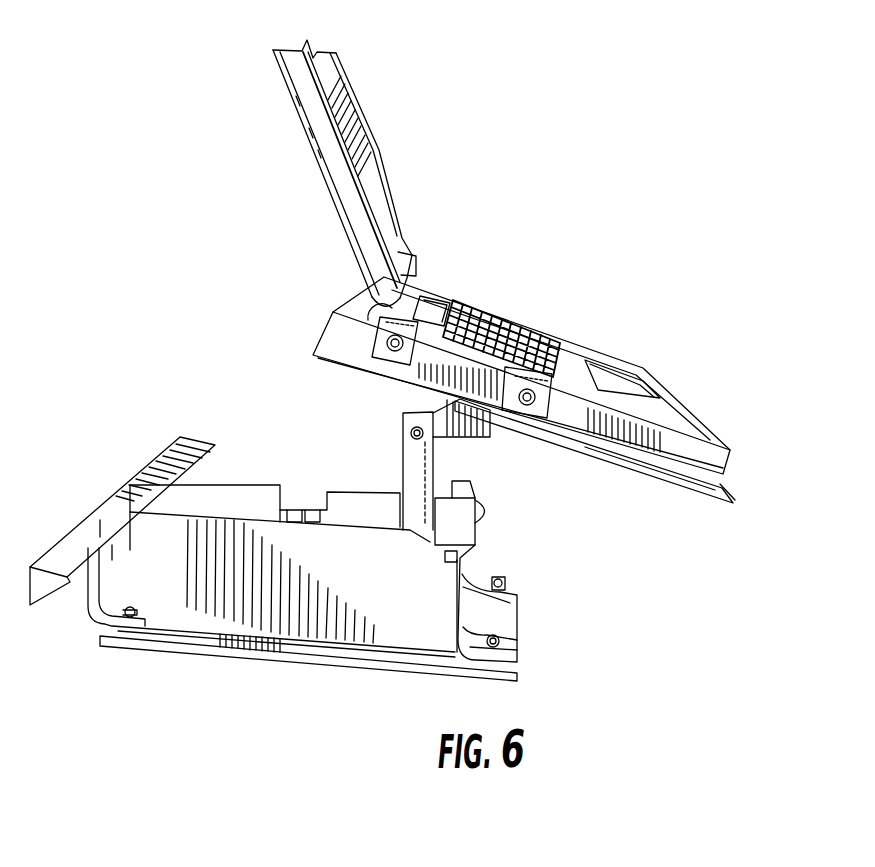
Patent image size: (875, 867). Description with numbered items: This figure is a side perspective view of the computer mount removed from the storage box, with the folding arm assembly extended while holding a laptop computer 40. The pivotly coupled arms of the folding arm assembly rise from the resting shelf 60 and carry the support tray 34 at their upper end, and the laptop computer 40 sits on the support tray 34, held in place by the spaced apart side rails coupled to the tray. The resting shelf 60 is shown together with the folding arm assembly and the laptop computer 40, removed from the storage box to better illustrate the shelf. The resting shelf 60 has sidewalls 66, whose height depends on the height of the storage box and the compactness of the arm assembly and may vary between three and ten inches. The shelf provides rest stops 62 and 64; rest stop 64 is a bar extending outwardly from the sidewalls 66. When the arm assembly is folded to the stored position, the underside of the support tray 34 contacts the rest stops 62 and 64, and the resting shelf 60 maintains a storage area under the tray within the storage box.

The laptop computer 40 is at (306, 137).
The support tray 34 is at (727, 505).
The rest stop 62 is at (492, 510).
The sidewalls 66 is at (377, 590).
The resting shelf 60 is at (220, 655).
The rest stop 64 is at (100, 518).